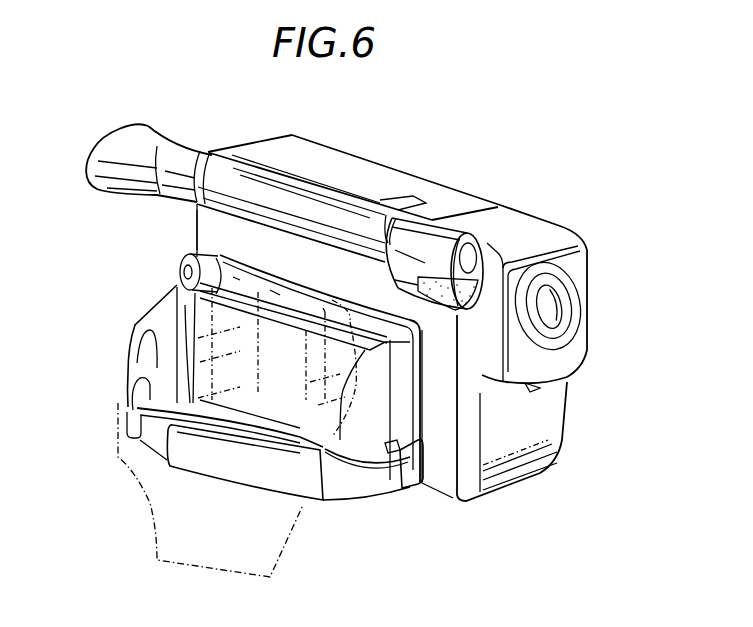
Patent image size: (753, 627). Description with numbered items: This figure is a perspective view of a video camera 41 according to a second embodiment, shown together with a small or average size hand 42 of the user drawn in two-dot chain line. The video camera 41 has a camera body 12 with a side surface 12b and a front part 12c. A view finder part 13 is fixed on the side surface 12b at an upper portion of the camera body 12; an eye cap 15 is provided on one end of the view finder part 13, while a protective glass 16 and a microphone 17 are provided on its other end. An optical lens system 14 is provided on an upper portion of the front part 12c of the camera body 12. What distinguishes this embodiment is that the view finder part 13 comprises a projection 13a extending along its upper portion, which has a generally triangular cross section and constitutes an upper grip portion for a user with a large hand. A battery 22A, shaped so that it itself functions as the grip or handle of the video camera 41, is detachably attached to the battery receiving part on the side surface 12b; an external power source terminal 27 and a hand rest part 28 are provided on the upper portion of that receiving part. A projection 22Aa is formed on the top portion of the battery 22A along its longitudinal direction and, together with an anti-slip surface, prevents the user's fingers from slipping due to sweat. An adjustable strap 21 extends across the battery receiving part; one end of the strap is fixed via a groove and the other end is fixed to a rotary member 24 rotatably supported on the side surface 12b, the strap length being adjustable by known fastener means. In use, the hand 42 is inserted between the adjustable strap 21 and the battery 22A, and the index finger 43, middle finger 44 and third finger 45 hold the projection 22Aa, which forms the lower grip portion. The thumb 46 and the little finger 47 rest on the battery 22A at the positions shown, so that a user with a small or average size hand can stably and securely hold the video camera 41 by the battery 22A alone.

The camera body 12 is at (440, 205).
The side surface 12b is at (200, 218).
The front part 12c is at (552, 422).
The view finder part 13 is at (235, 177).
The projection 13a is at (292, 197).
The optical lens system 14 is at (550, 310).
The eye cap 15 is at (157, 140).
The protective glass 16 is at (468, 258).
The microphone 17 is at (443, 297).
The adjustable strap 21 is at (215, 462).
The battery 22A is at (215, 326).
The projection 22Aa is at (284, 348).
The rotary member 24 is at (417, 483).
The external power source terminal 27 is at (178, 274).
The hand rest part 28 is at (323, 308).
The video camera 41 is at (446, 128).
The hand 42 is at (152, 521).
The index finger 43 is at (233, 277).
The middle finger 44 is at (270, 290).
The third finger 45 is at (326, 301).
The thumb 46 is at (118, 397).
The little finger 47 is at (354, 380).